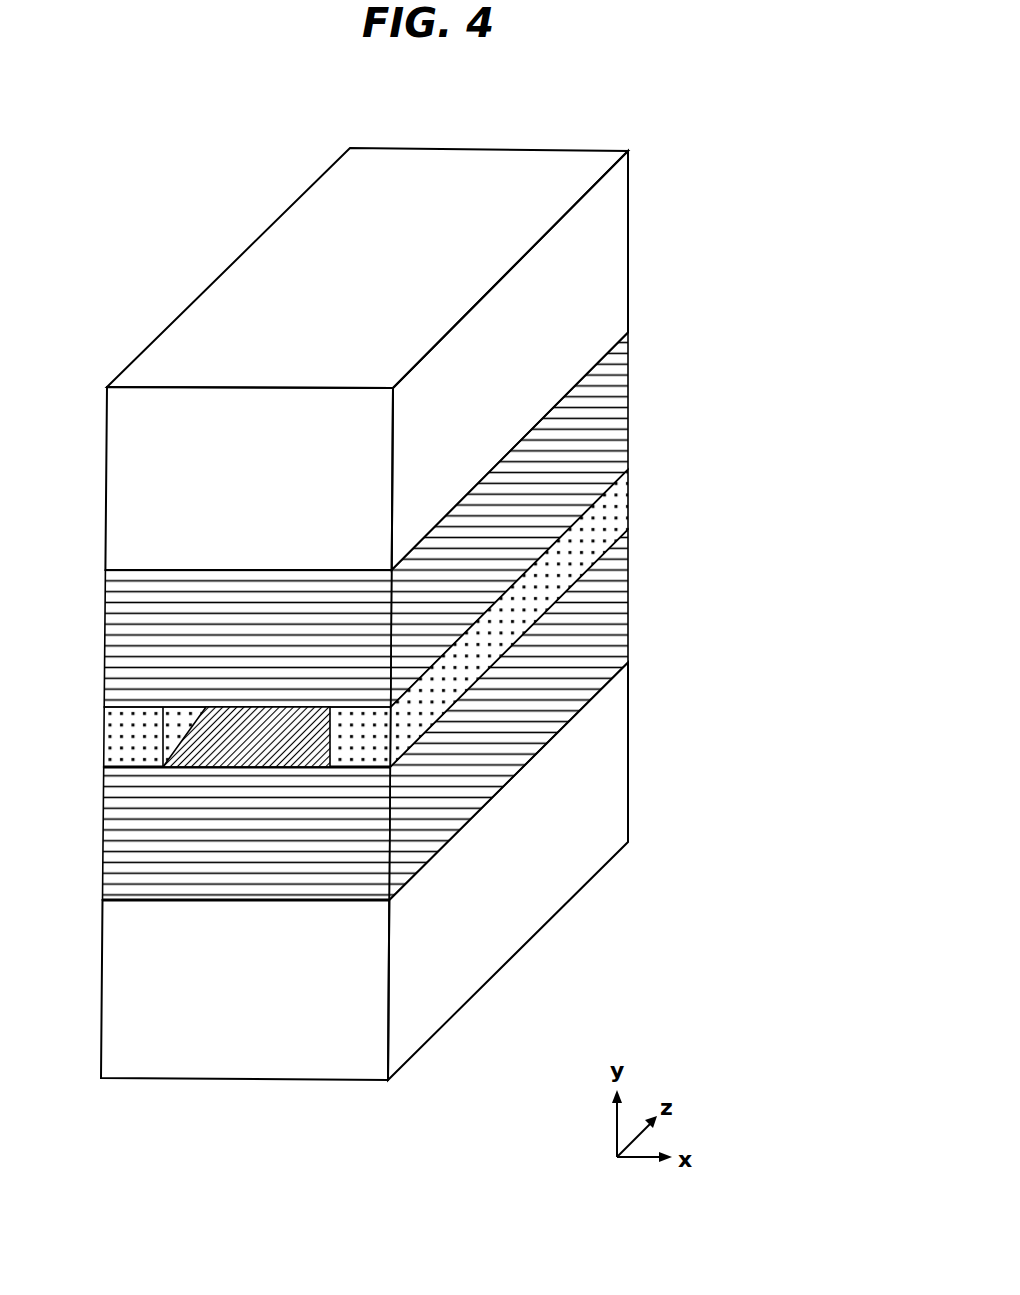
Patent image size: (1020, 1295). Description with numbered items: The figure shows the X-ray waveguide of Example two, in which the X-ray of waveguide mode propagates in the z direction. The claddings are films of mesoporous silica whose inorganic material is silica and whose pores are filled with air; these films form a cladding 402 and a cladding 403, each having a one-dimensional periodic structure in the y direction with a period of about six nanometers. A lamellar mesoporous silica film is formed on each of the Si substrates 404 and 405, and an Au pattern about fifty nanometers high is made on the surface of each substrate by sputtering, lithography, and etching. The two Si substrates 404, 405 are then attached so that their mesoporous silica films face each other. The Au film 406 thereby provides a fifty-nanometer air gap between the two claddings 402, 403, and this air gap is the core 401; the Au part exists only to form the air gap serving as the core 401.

The Si substrate 405 is at (620, 253).
The cladding 403 is at (620, 420).
The Au film 406 is at (618, 515).
The cladding 402 is at (618, 620).
The core 401 is at (283, 749).
The Si substrate 404 is at (613, 800).